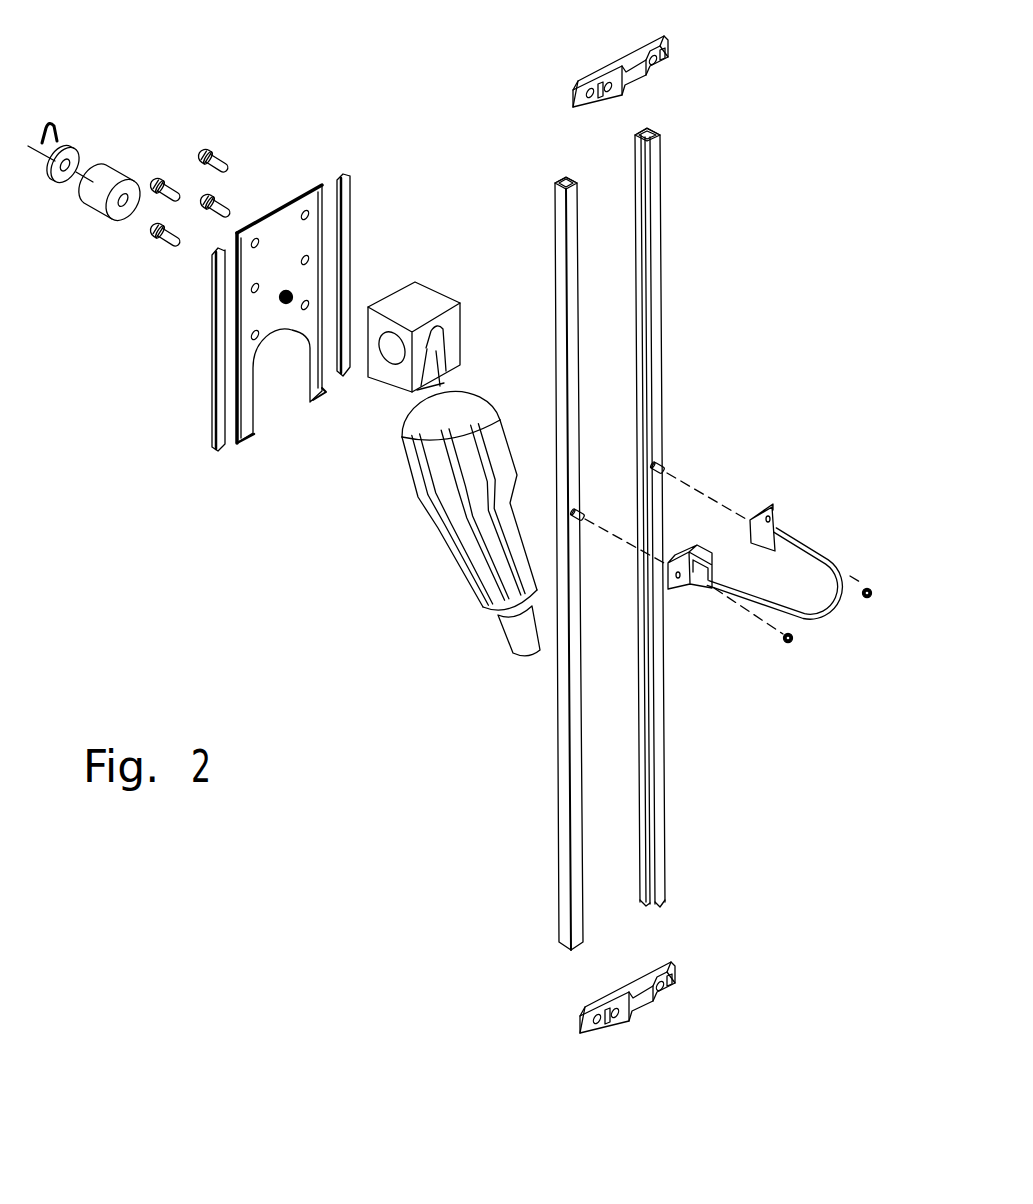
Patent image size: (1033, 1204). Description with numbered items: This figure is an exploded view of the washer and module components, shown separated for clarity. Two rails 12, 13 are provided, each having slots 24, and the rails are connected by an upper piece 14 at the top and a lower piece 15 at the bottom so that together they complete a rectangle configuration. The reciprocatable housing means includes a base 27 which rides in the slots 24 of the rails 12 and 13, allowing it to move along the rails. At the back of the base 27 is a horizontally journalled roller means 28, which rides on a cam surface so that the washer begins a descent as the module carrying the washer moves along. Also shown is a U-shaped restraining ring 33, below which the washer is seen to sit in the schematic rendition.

The rail 12 is at (558, 742).
The rail 13 is at (660, 740).
The upper piece 14 is at (640, 43).
The lower piece 15 is at (645, 1002).
The slots 24 is at (568, 180).
The base 27 is at (311, 201).
The roller means 28 is at (118, 190).
The U-shaped restraining ring 33 is at (832, 565).